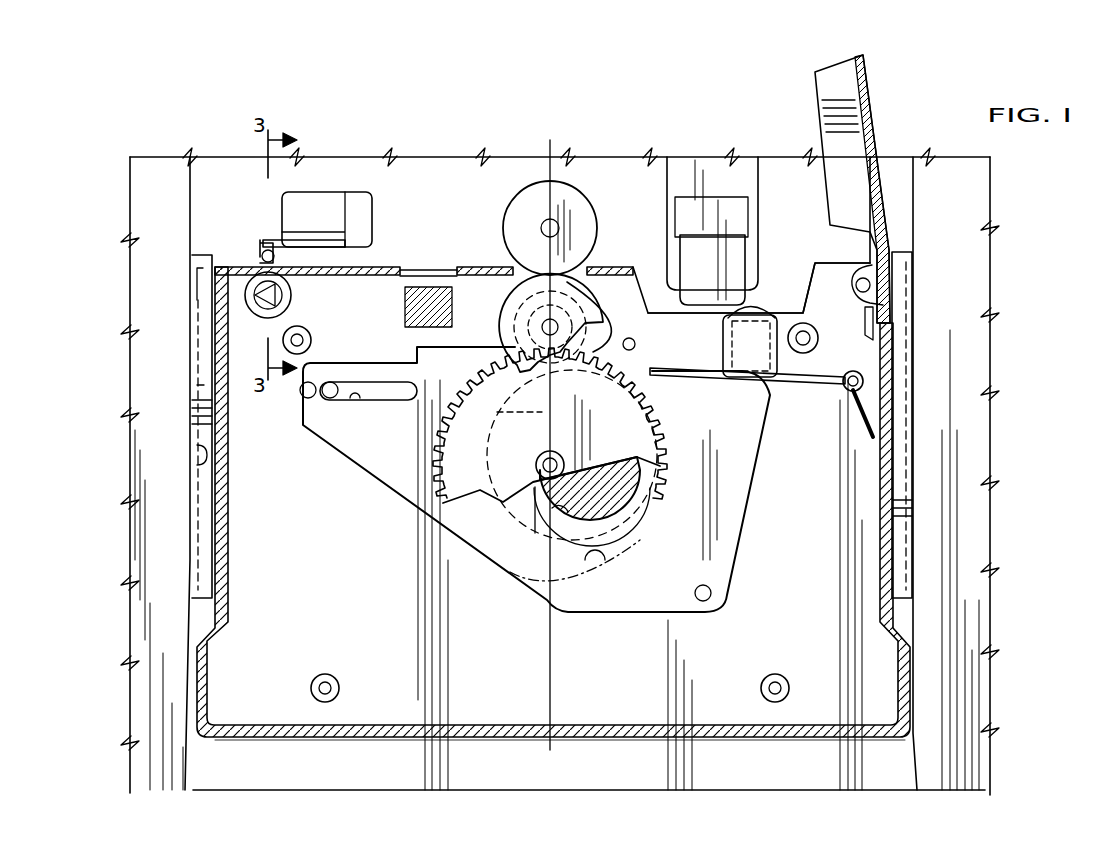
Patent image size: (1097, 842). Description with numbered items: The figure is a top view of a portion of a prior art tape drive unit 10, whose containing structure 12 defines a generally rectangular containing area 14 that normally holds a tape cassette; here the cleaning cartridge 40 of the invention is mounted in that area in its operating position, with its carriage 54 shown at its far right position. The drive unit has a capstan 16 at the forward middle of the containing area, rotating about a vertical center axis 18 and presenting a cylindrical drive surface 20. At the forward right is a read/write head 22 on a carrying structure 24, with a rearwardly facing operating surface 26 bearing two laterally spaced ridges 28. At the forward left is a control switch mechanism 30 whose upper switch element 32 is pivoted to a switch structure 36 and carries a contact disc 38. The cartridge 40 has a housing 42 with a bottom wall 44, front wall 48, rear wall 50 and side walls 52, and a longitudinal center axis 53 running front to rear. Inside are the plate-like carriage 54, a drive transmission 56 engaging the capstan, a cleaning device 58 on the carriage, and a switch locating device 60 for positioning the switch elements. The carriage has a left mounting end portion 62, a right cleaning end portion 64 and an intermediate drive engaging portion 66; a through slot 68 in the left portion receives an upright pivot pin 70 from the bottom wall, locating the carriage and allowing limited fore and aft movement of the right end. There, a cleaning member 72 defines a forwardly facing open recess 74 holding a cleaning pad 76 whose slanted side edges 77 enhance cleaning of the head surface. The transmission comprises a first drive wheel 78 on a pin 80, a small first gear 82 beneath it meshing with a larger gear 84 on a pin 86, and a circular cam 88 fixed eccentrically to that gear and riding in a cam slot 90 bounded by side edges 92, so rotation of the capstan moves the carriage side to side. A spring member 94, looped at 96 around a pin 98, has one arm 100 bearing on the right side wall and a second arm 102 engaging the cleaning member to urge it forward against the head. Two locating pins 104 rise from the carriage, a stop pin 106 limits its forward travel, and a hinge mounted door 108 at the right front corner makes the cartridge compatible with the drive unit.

The tape drive unit 10 is at (128, 178).
The containing structure 12 is at (140, 206).
The containing area 14 is at (200, 448).
The capstan 16 is at (535, 176).
The vertical center axis 18 is at (535, 186).
The cylindrical drive surface 20 is at (540, 224).
The read/write head 22 is at (759, 258).
The carrying structure 24 is at (736, 160).
The operating surface 26 is at (740, 320).
The ridges 28 is at (699, 253).
The control switch mechanism 30 is at (341, 172).
The upper switch element 32 is at (258, 180).
The switch structure 36 is at (352, 215).
The contact discs 38 is at (266, 250).
The cleaning cartridge 40 is at (553, 524).
The housing 42 is at (386, 738).
The bottom wall 44 is at (611, 671).
The front wall 48 is at (510, 275).
The rear wall 50 is at (438, 745).
The side walls 52 is at (882, 556).
The longitudinal center axis 53 is at (548, 742).
The carriage 54 is at (511, 484).
The drive transmission 56 is at (546, 345).
The cleaning device 58 is at (622, 508).
The switch locating device 60 is at (294, 302).
The left mounting end portion 62 is at (511, 501).
The right cleaning end portion 64 is at (821, 424).
The intermediate drive engaging portion 66 is at (511, 484).
The through slot 68 is at (355, 402).
The pivot pin 70 is at (511, 501).
The cleaning member 72 is at (622, 508).
The open recess 74 is at (862, 327).
The cleaning pad 76 is at (759, 268).
The slanted side edges 77 is at (773, 318).
The first drive wheel 78 is at (510, 294).
The pin 80 is at (510, 285).
The first gear 82 is at (699, 253).
The larger gear 84 is at (486, 444).
The pin 86 is at (548, 465).
The circular cam 88 is at (569, 526).
The cam slot 90 is at (608, 540).
The side edges 92 is at (569, 526).
The spring member 94 is at (850, 398).
The loop 96 is at (865, 424).
The pin 98 is at (865, 424).
The spring arm 100 is at (867, 437).
The second spring arm 102 is at (680, 380).
The locating pins 104 is at (306, 396).
The stop pin 106 is at (632, 338).
The hinge mounted door 108 is at (868, 126).